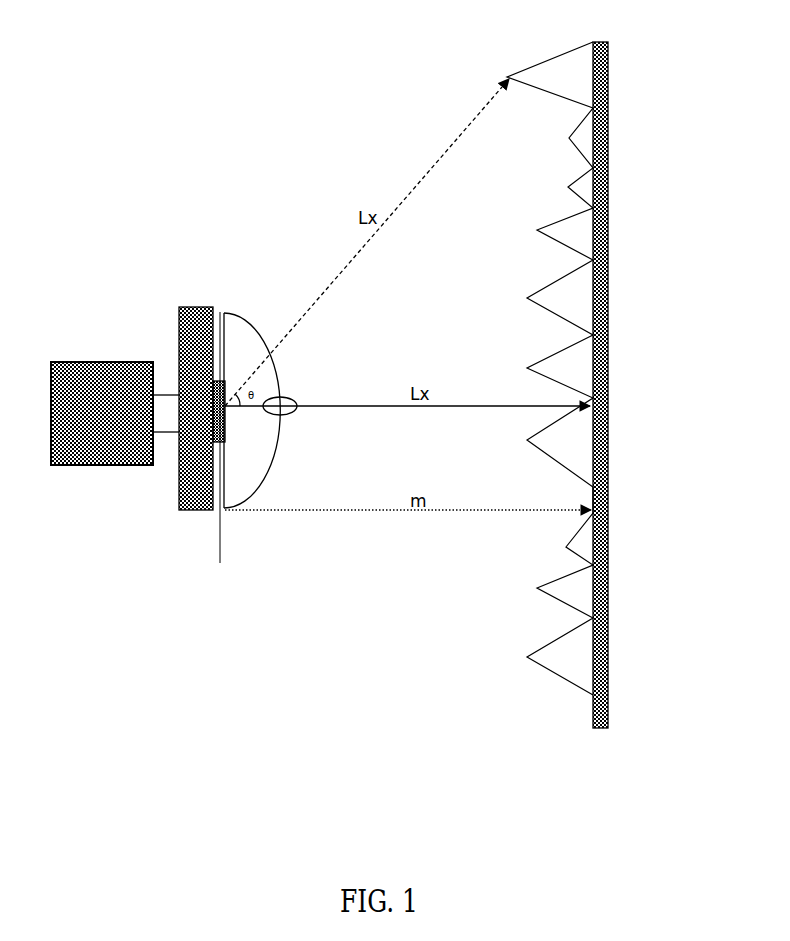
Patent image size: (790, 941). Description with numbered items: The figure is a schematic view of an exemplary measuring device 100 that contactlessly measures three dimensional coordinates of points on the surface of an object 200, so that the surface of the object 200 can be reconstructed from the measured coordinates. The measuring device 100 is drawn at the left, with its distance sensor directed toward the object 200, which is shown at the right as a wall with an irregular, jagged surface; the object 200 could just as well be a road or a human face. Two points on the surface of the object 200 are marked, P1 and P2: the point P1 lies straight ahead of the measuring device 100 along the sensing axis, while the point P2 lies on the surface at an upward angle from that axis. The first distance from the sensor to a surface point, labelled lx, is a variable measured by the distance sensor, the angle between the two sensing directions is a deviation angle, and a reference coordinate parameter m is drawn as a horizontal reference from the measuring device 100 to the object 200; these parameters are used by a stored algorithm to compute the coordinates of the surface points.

The measuring device 100 is at (181, 325).
The object 200 is at (597, 62).
The first reflection point P1 is at (407, 423).
The second reflection point P2 is at (372, 228).